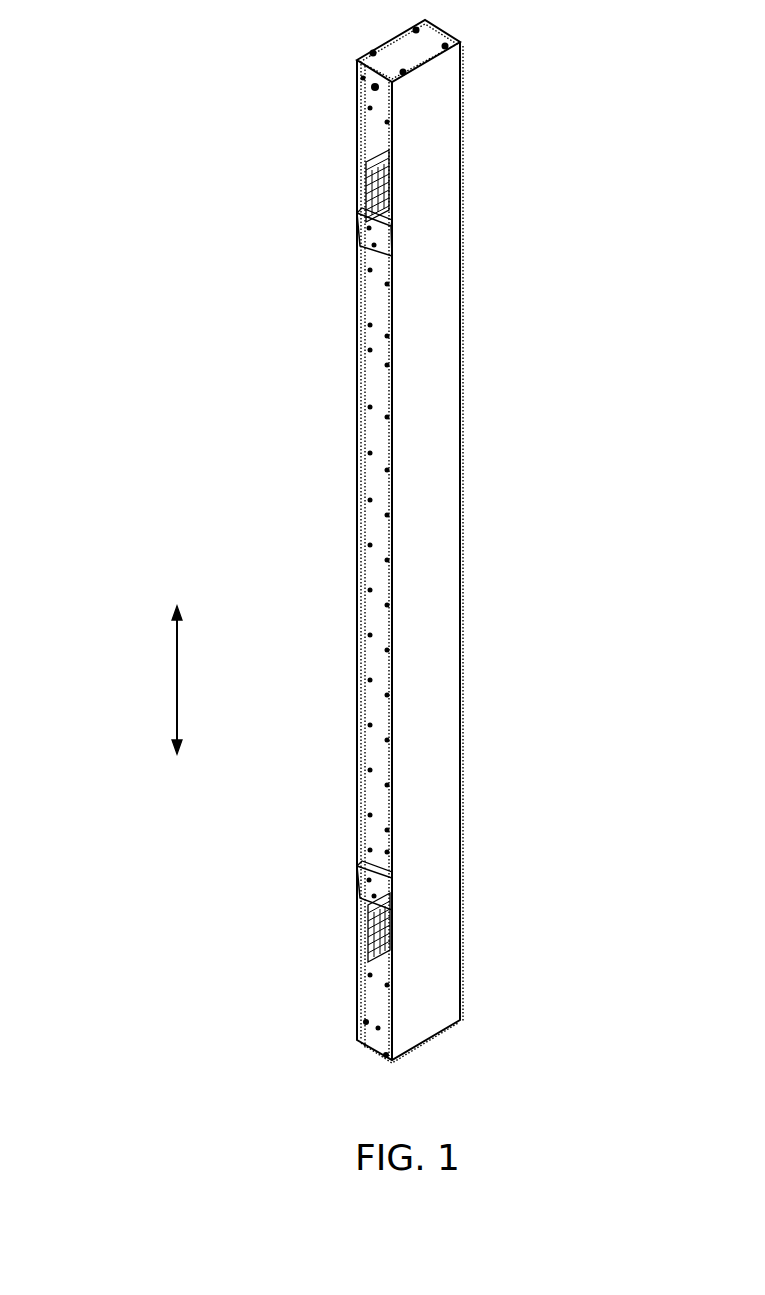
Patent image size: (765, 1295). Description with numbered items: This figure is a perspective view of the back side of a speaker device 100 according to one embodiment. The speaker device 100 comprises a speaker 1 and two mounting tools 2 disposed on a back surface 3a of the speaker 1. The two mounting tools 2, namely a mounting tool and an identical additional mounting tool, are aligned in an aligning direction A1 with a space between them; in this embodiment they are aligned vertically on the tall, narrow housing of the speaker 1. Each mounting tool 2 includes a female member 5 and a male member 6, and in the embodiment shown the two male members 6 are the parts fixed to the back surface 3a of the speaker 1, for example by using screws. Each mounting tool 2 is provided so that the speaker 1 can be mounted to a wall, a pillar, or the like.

The speaker device 100 is at (203, 93).
The speaker 1 is at (463, 217).
The mounting tool 2 is at (314, 246).
The back surface 3a is at (378, 434).
The female member 5 is at (360, 241).
The male member 6 is at (361, 213).
The aligning direction A1 is at (197, 680).